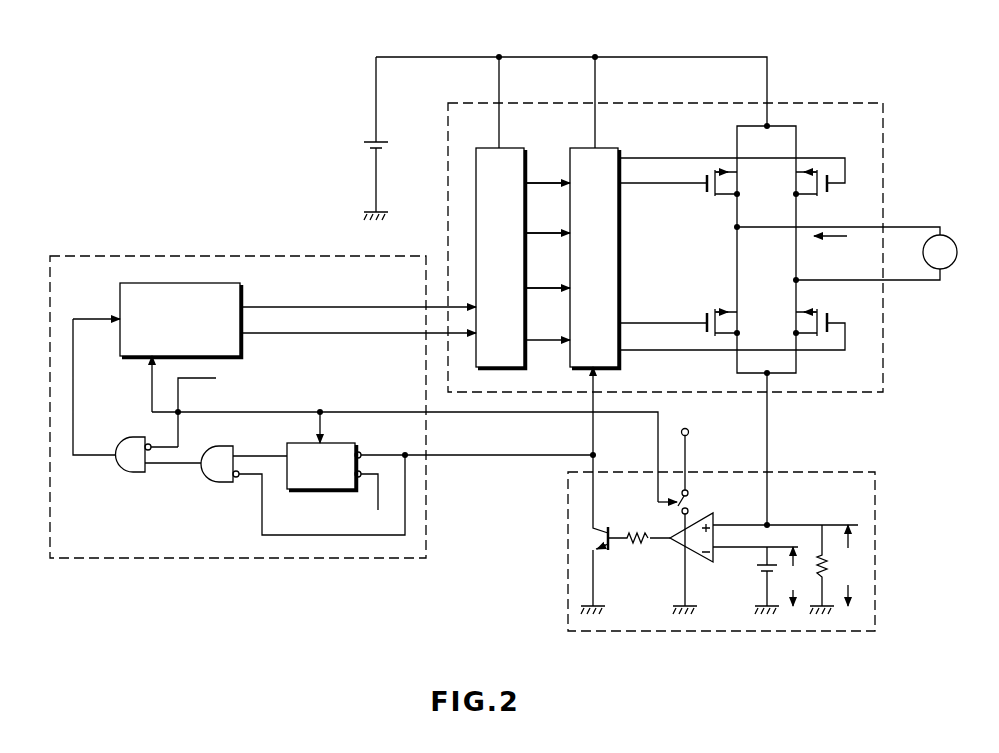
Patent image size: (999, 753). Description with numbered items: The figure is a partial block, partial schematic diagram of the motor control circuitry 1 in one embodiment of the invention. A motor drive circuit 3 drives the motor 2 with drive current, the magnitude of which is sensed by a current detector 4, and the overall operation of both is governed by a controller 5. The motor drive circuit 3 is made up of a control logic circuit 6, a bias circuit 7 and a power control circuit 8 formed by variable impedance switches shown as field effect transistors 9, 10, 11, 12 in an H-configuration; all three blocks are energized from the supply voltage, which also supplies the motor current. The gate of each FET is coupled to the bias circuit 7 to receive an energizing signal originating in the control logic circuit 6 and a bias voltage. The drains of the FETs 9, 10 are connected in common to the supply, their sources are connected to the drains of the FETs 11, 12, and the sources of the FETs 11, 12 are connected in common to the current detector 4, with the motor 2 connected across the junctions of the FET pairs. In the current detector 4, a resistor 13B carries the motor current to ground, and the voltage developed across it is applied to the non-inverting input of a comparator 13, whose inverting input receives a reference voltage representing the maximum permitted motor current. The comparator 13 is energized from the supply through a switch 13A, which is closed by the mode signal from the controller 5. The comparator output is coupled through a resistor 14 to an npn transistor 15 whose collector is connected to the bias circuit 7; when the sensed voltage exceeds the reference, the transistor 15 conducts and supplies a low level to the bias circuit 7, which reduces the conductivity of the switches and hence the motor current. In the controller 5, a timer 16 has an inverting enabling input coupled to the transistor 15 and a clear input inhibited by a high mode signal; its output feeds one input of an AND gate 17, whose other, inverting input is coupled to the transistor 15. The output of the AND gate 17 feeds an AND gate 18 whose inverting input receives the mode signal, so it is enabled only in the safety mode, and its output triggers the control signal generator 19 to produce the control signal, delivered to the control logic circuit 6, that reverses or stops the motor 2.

The motor control circuit 1 is at (897, 57).
The motor 2 is at (948, 240).
The motor drive circuit 3 is at (886, 135).
The current detector 4 is at (878, 522).
The controller 5 is at (148, 560).
The control logic circuit 6 is at (512, 149).
The bias circuit 7 is at (605, 149).
The power control circuit 8 is at (810, 154).
The field effect transistor 9 is at (712, 196).
The field effect transistor 10 is at (817, 196).
The field effect transistor 11 is at (712, 311).
The field effect transistor 12 is at (817, 311).
The comparator 13 is at (700, 562).
The switch 13A is at (688, 498).
The resistor 13B is at (822, 556).
The resistor 14 is at (636, 530).
The transistor 15 is at (612, 546).
The timer 16 is at (297, 490).
The AND gate 17 is at (218, 484).
The AND gate 18 is at (130, 474).
The control signal generator 19 is at (243, 292).